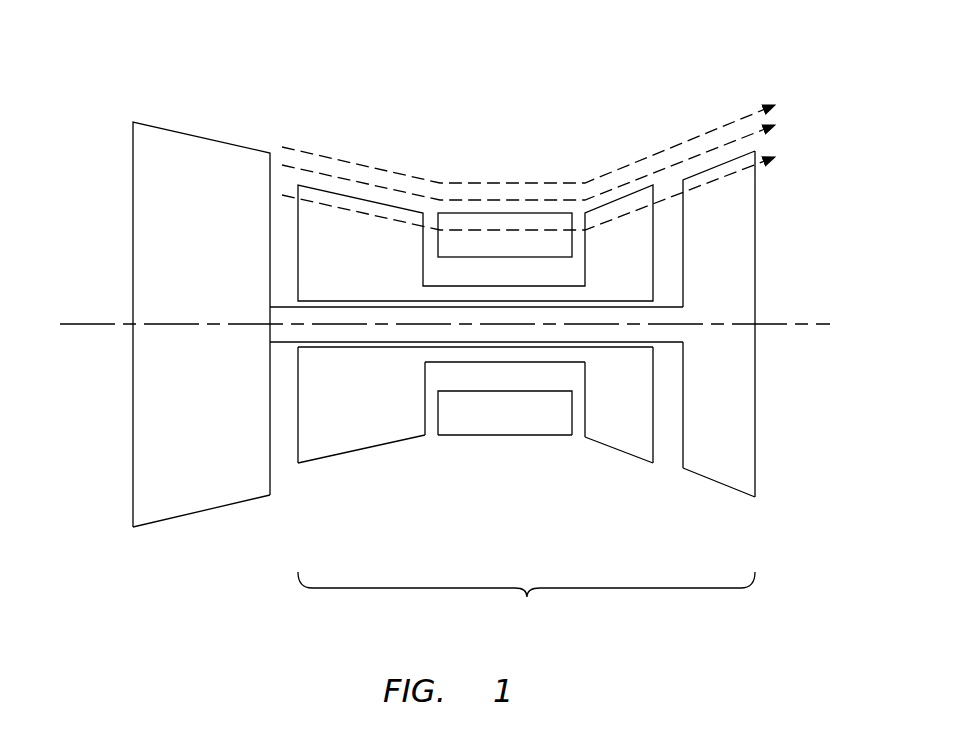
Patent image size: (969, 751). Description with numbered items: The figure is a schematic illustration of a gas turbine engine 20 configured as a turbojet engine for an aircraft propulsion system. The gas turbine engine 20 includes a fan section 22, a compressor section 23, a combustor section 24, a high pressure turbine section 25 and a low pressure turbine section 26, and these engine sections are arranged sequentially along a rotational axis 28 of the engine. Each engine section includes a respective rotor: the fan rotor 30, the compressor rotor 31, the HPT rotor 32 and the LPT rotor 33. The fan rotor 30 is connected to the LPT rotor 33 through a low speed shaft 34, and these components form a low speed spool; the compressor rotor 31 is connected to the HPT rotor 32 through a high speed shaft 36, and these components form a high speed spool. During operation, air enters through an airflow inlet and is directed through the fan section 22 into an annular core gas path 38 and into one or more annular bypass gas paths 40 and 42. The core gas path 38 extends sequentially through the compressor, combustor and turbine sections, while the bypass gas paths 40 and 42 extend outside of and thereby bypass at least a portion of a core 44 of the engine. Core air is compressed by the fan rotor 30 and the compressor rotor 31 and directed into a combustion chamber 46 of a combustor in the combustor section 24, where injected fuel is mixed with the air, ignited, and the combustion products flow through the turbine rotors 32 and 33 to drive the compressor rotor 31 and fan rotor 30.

The gas turbine engine 20 is at (137, 80).
The fan section 22 is at (190, 531).
The compressor section 23 is at (365, 461).
The combustor section 24 is at (502, 449).
The high pressure turbine section 25 is at (615, 461).
The low pressure turbine section 26 is at (707, 494).
The rotational axis 28 is at (812, 326).
The fan rotor 30 is at (220, 508).
The compressor rotor 31 is at (385, 447).
The HPT rotor 32 is at (595, 442).
The LPT rotor 33 is at (692, 472).
The low speed shaft 34 is at (287, 343).
The high speed shaft 36 is at (460, 366).
The core gas path 38 is at (326, 195).
The bypass gas path 40 is at (368, 185).
The bypass gas path 42 is at (397, 172).
The core 44 is at (526, 601).
The combustion chamber 46 is at (492, 426).